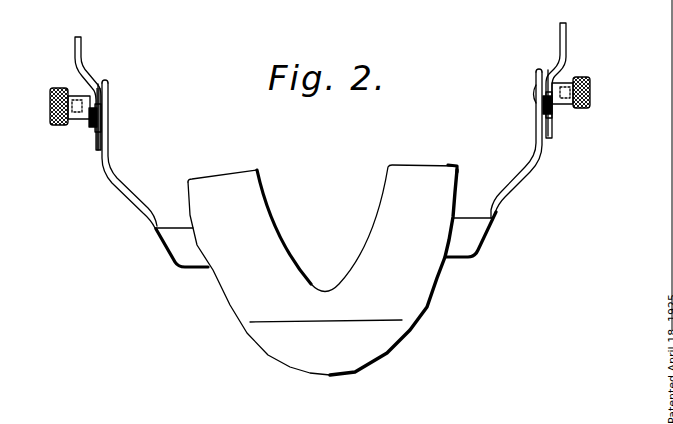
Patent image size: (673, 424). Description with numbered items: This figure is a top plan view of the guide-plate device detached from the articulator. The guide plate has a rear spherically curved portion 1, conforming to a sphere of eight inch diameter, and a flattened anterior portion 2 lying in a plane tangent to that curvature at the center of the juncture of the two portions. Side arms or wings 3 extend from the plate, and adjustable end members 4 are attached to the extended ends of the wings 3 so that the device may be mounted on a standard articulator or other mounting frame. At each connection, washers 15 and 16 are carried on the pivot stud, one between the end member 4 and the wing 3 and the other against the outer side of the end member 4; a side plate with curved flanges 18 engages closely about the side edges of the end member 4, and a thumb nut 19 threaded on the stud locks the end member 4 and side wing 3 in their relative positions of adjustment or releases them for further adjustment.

The spherically curved portion 1 is at (384, 228).
The flattened anterior portion 2 is at (380, 348).
The side arms or wings 3 is at (143, 213).
The adjustable end members 4 is at (74, 73).
The washer 15 is at (100, 79).
The washer 16 is at (90, 124).
The curved flanges 18 is at (88, 131).
The thumb nut 19 is at (50, 116).